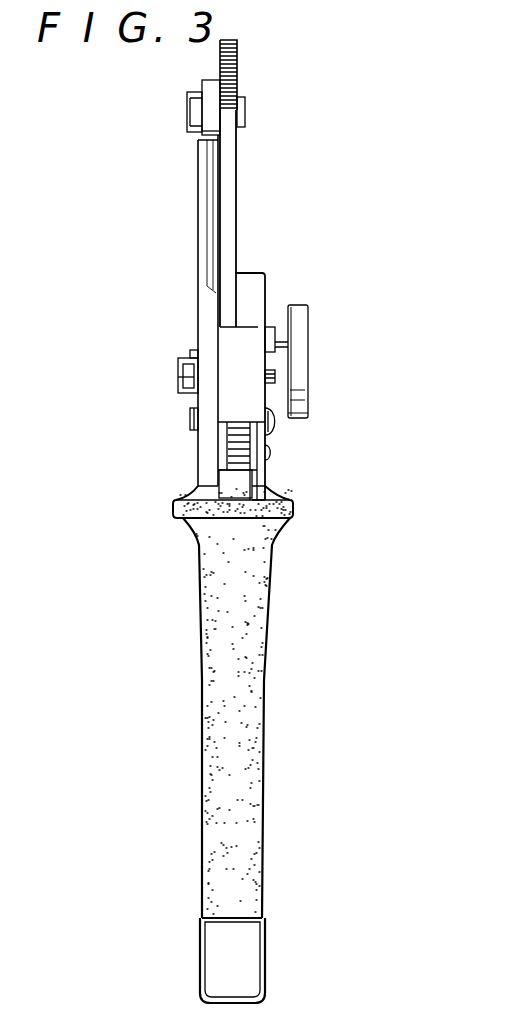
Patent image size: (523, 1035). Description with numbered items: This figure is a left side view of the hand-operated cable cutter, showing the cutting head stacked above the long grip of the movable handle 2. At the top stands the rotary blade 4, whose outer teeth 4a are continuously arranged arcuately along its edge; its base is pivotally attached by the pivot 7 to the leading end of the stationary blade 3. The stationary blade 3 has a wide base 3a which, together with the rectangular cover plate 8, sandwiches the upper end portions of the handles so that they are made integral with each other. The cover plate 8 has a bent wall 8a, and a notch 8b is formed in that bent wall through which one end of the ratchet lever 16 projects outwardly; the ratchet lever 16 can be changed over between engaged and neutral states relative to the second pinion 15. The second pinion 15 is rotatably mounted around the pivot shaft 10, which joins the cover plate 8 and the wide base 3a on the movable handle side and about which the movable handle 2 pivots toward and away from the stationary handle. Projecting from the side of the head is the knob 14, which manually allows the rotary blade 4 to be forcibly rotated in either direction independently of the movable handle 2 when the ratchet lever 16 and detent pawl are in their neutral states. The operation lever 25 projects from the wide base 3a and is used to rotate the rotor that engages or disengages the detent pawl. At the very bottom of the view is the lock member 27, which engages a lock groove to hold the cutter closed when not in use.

The movable handle 2 is at (245, 667).
The stationary blade 3 is at (200, 226).
The wide base 3a is at (200, 412).
The rotary blade 4 is at (237, 180).
The outer teeth 4a is at (235, 75).
The pivot 7 is at (245, 120).
The cover plate 8 is at (255, 290).
The bent wall 8a is at (228, 356).
The notch 8b is at (223, 446).
The pivot shaft 10 is at (273, 428).
The knob 14 is at (298, 347).
The second pinion 15 is at (240, 452).
The ratchet lever 16 is at (233, 484).
The operation lever 25 is at (185, 380).
The lock member 27 is at (262, 952).